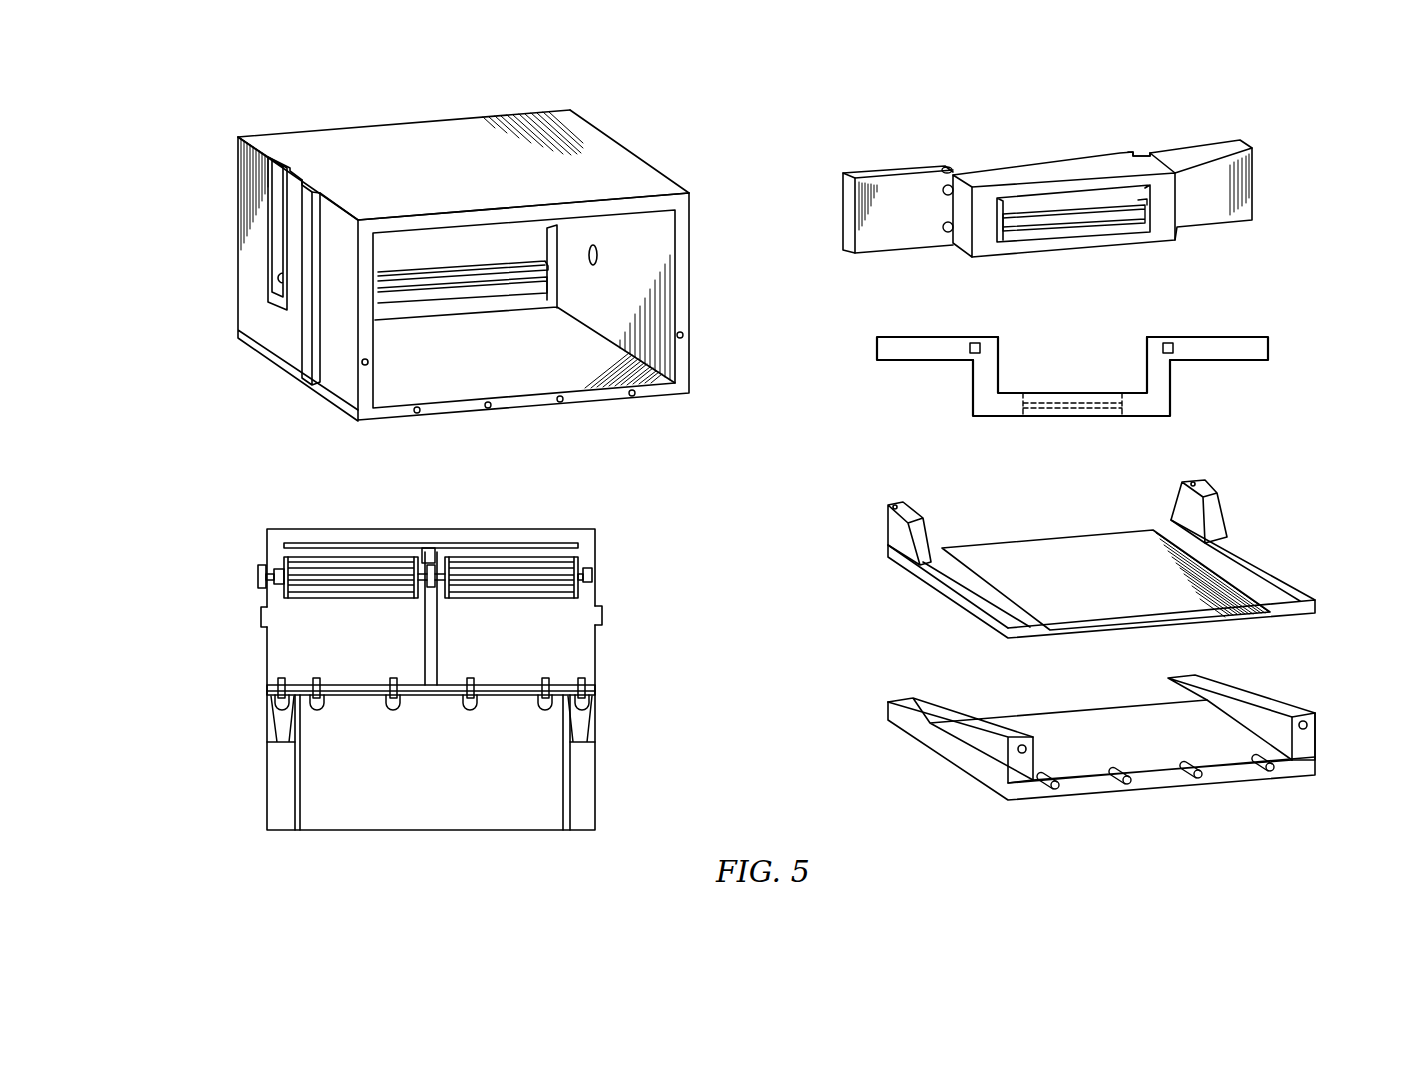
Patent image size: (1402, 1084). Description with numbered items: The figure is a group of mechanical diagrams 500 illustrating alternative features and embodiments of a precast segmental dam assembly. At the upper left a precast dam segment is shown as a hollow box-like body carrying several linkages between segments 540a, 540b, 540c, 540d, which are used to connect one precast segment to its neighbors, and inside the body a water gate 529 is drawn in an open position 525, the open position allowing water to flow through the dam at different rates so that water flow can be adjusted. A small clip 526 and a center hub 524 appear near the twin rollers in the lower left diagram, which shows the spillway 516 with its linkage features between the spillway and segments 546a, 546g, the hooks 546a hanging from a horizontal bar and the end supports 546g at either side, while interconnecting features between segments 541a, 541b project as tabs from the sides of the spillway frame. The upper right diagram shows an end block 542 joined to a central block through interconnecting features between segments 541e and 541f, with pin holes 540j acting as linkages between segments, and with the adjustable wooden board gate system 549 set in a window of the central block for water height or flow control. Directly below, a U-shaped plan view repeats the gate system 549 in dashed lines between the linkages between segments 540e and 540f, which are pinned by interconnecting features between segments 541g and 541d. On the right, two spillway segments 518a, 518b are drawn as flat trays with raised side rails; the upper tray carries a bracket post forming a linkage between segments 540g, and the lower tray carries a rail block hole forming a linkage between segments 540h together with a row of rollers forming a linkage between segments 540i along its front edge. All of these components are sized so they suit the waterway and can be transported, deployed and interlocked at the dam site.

The group of mechanical diagrams 500 is at (1327, 305).
The spillway 516 is at (597, 800).
The spillway segment 518a is at (1135, 612).
The spillway segment 518b is at (1043, 545).
The center hub 524 is at (432, 562).
The open position 525 is at (437, 290).
The clip 526 is at (423, 555).
The water gate 529 is at (487, 262).
The linkage between segments 540a is at (307, 342).
The linkage between segments 540b is at (634, 396).
The linkage between segments 540c is at (684, 337).
The linkage between segments 540d is at (648, 163).
The linkage between segments 540e is at (970, 355).
The linkage between segments 540f is at (1173, 345).
The linkage between segments 540g is at (1194, 481).
The linkage between segments 540h is at (1027, 749).
The linkage between segments 540i is at (1200, 779).
The pin holes 540j is at (944, 231).
The interconnecting feature between segments 541a is at (261, 615).
The interconnecting feature between segments 541b is at (603, 615).
The interconnecting feature between segments 541d is at (1163, 347).
The interconnecting feature between segments 541e is at (948, 166).
The interconnecting feature between segments 541f is at (1130, 151).
The interconnecting feature between segments 541g is at (977, 343).
The end block 542 is at (893, 172).
The linkage feature between spillway and segments 546a is at (393, 712).
The linkage feature between spillway and segments 546g is at (278, 722).
The adjustable wooden board gate system 549 is at (1103, 222).